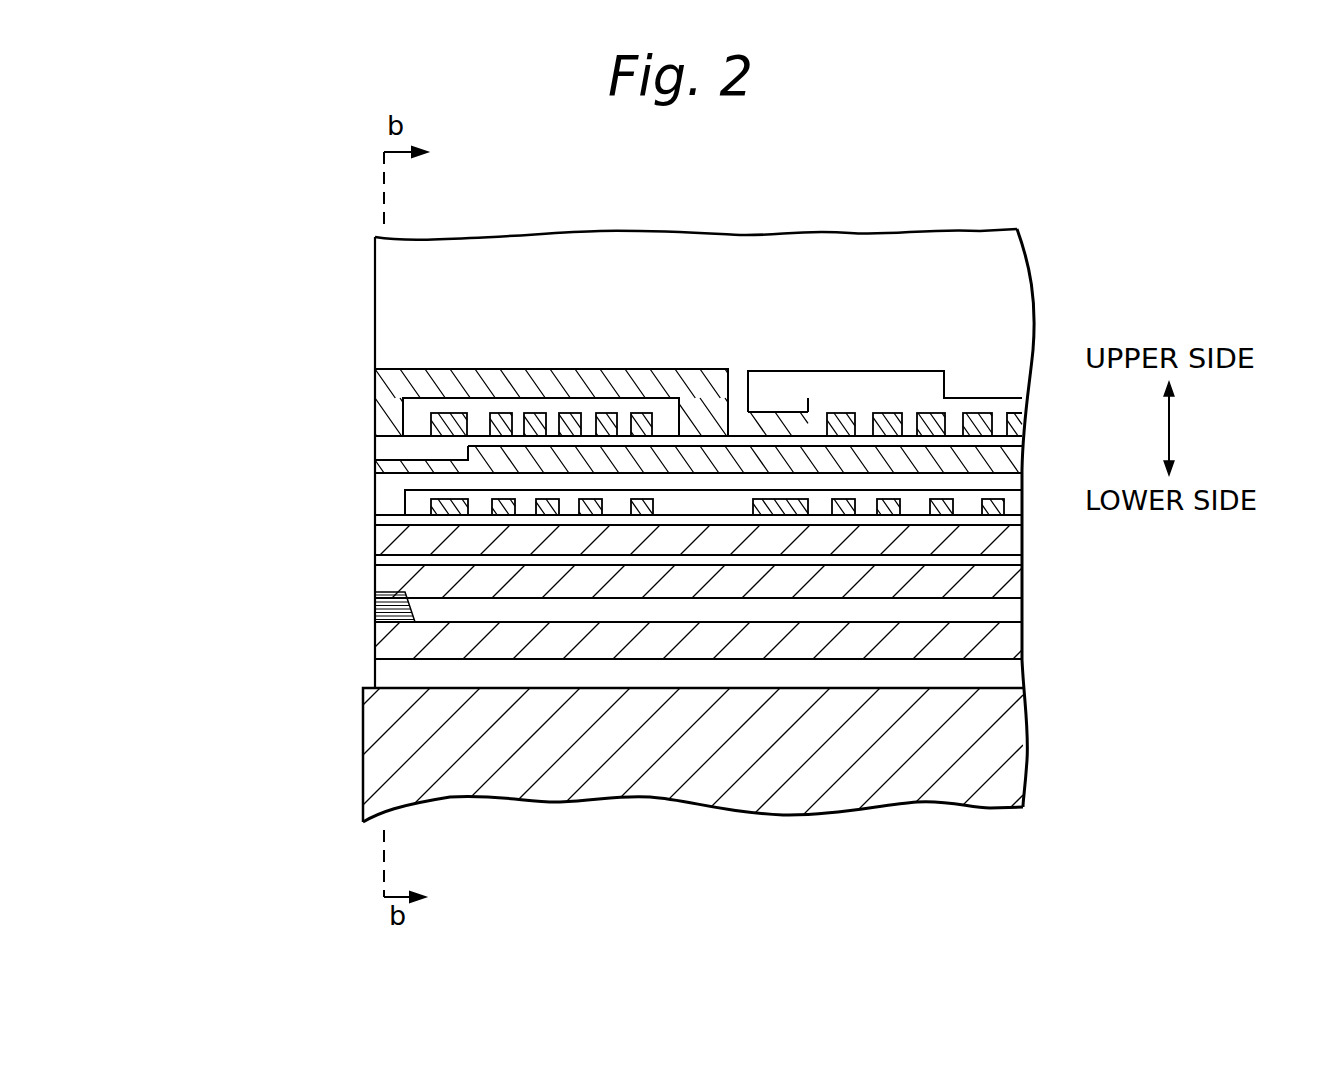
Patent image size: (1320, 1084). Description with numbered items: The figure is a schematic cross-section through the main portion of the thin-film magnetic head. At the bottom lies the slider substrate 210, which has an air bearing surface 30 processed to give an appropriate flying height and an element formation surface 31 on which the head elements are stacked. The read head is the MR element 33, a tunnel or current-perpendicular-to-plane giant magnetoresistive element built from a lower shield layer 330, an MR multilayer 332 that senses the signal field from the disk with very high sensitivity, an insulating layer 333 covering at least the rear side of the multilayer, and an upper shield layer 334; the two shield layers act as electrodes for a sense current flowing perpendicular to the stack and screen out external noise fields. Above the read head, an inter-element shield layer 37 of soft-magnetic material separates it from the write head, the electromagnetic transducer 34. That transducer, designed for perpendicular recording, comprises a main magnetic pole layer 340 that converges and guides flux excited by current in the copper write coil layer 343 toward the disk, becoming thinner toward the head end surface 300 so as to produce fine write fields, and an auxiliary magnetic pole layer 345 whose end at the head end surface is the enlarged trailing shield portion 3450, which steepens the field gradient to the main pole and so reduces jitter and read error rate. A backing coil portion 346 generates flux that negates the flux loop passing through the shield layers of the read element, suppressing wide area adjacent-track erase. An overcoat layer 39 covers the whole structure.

The head end surface 300 is at (375, 273).
The overcoat layer 39 is at (680, 255).
The electromagnetic transducer 34 is at (218, 308).
The auxiliary magnetic pole layer 345 is at (513, 382).
The trailing shield portion 3450 is at (397, 390).
The write coil layer 343 is at (440, 428).
The main magnetic pole layer 340 is at (403, 465).
The backing coil portion 346 is at (412, 507).
The inter-element shield layer 37 is at (392, 540).
The MR element 33 is at (218, 537).
The upper shield layer 334 is at (392, 572).
The insulating layer 333 is at (473, 607).
The MR multilayer 332 is at (376, 612).
The lower shield layer 330 is at (393, 638).
The element formation surface 31 is at (460, 686).
The air bearing surface 30 is at (363, 740).
The slider substrate 210 is at (808, 780).